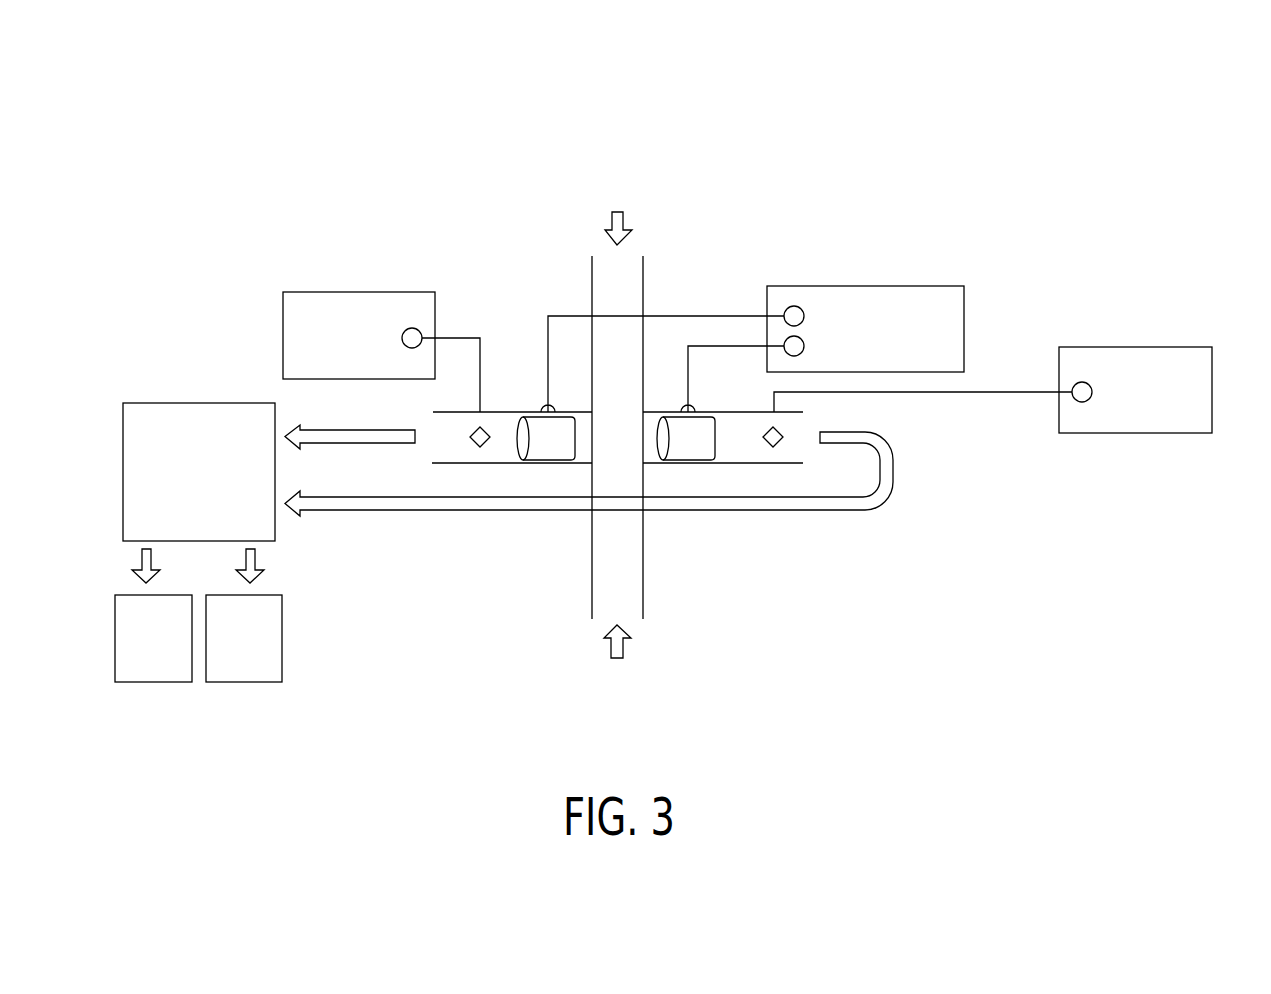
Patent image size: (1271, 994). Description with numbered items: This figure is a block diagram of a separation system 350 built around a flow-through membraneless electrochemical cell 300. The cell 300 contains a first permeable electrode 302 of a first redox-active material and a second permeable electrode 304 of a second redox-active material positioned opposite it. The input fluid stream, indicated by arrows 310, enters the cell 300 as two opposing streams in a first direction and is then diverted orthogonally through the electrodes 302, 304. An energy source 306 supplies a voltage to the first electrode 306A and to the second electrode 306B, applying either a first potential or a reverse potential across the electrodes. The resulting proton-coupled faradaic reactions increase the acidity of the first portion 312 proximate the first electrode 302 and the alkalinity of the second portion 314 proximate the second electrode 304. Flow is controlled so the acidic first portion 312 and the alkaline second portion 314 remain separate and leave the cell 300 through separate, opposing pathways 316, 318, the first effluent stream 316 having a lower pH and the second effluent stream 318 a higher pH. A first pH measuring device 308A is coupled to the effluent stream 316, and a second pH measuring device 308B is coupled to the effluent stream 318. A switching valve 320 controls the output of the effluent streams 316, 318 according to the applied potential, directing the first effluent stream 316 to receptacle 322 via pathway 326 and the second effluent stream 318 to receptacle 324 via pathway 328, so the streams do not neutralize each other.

The flow-through membraneless electrochemical cell 300 is at (660, 286).
The first permeable electrode 302 is at (550, 463).
The second permeable electrode 304 is at (690, 463).
The energy source 306 is at (964, 330).
The voltage connection to first electrode 306A is at (562, 310).
The voltage connection to second electrode 306B is at (700, 352).
The first pH measuring device 308A is at (357, 292).
The second pH measuring device 308B is at (1215, 388).
The input fluid stream arrows 310 is at (613, 208).
The acidic first portion 312 is at (578, 435).
The alkaline second portion 314 is at (650, 437).
The first effluent stream pathway 316 is at (385, 428).
The second effluent stream pathway 318 is at (893, 470).
The switching valve 320 is at (200, 403).
The first storage receptacle 322 is at (155, 682).
The second storage receptacle 324 is at (240, 682).
The first output pathway 326 is at (156, 565).
The second output pathway 328 is at (262, 565).
The separation system 350 is at (930, 114).